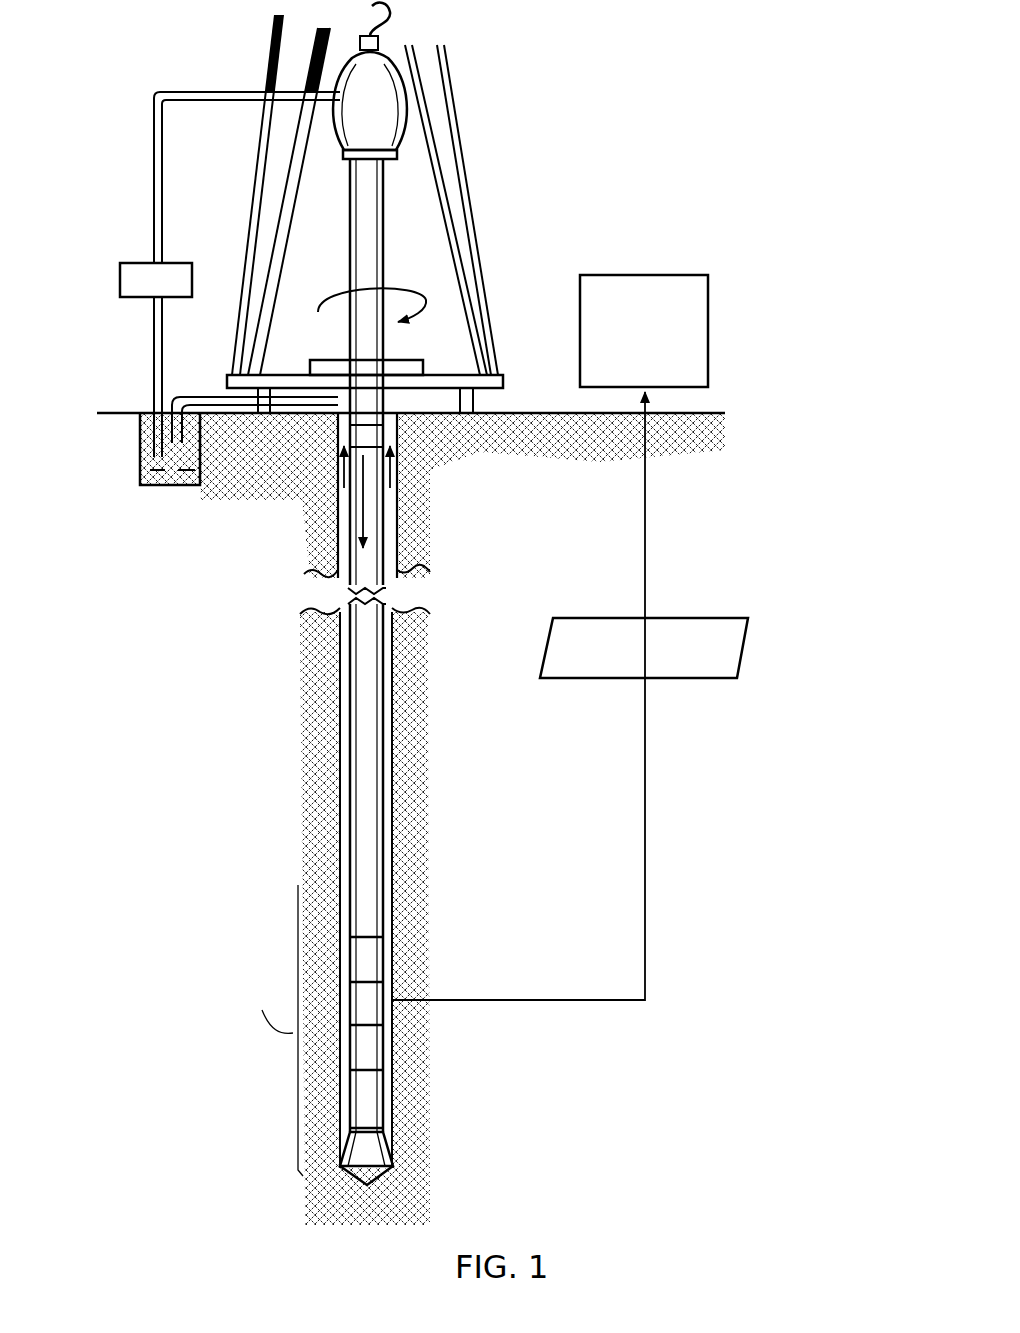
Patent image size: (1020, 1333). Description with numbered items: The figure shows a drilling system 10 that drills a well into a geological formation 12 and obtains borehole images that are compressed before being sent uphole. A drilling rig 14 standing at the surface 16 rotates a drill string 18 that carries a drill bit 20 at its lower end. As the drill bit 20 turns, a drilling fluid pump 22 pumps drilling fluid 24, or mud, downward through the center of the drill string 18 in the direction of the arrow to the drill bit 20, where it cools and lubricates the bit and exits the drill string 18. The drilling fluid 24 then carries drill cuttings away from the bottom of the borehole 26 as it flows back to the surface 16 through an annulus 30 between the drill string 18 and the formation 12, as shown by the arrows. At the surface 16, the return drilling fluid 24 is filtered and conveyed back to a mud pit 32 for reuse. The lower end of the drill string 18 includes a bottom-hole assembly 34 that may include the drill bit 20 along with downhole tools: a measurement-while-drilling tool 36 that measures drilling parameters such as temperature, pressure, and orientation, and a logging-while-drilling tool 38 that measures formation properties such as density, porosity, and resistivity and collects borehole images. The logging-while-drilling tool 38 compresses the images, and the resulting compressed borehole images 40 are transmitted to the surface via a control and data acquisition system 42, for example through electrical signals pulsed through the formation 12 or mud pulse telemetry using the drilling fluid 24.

The drilling system 10 is at (520, 31).
The geological formation 12 is at (544, 787).
The drilling rig 14 is at (478, 107).
The surface 16 is at (545, 411).
The drill string 18 is at (362, 408).
The drill bit 20 is at (372, 1160).
The drilling fluid pump 22 is at (120, 277).
The drilling fluid 24 is at (341, 500).
The borehole 26 is at (340, 808).
The annulus 30 is at (392, 410).
The mud pit 32 is at (178, 487).
The bottom-hole assembly 34 is at (271, 1030).
The measurement-while-drilling tool 36 is at (368, 962).
The logging-while-drilling tool 38 is at (368, 1048).
The compressed borehole images 40 is at (728, 618).
The control and data acquisition system 42 is at (685, 276).